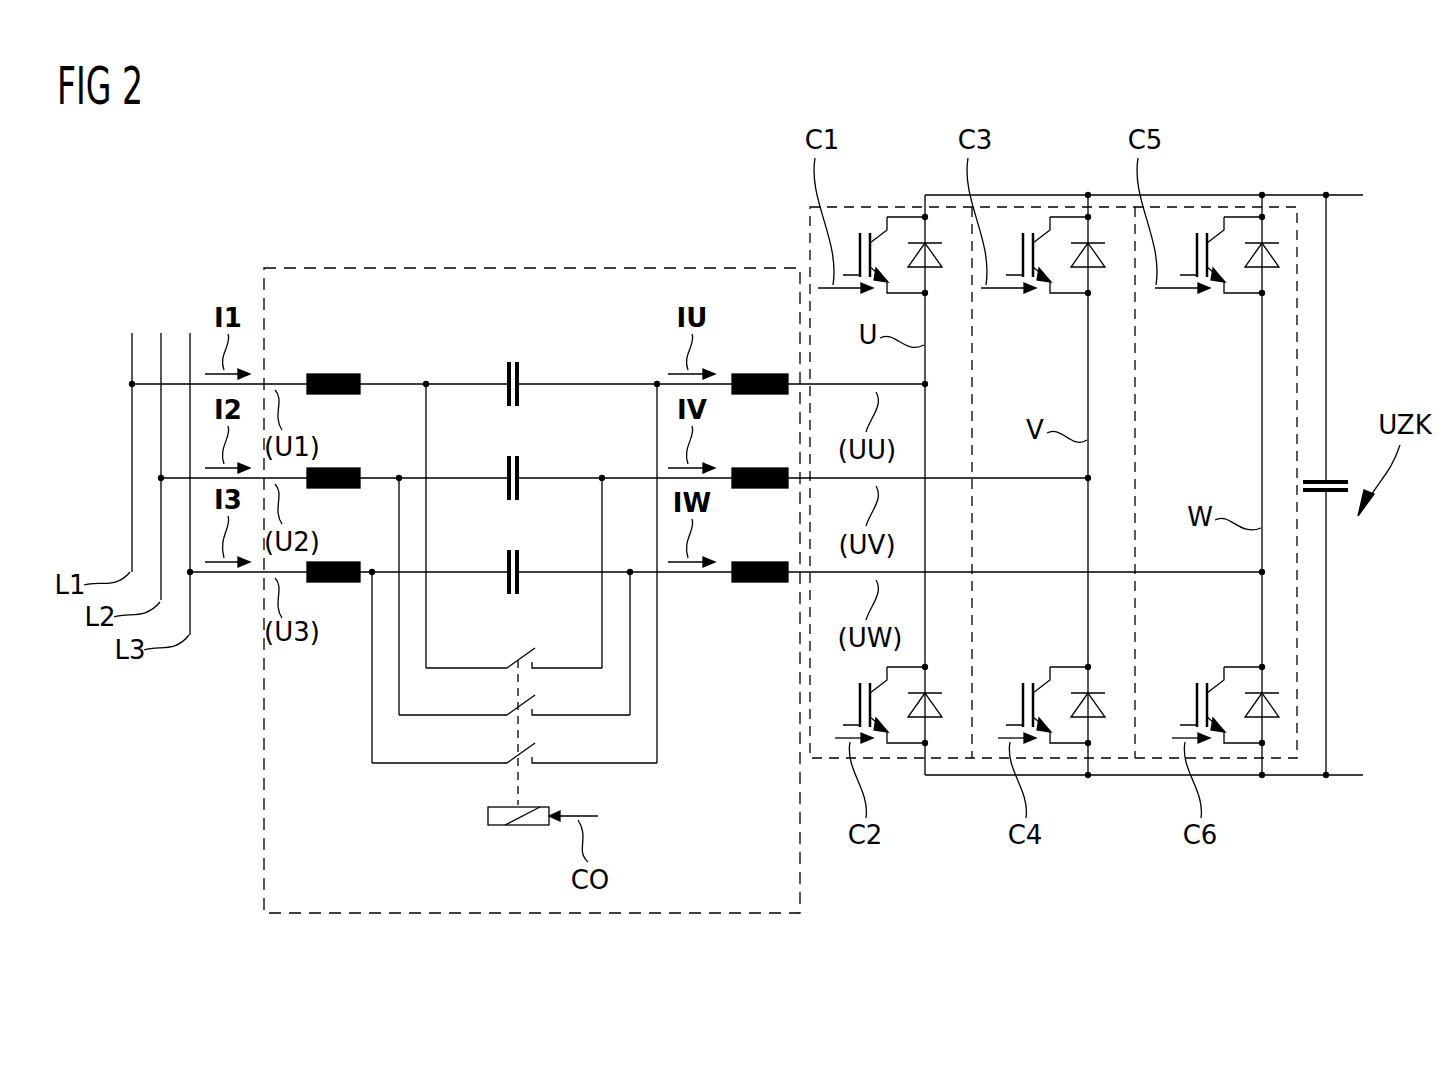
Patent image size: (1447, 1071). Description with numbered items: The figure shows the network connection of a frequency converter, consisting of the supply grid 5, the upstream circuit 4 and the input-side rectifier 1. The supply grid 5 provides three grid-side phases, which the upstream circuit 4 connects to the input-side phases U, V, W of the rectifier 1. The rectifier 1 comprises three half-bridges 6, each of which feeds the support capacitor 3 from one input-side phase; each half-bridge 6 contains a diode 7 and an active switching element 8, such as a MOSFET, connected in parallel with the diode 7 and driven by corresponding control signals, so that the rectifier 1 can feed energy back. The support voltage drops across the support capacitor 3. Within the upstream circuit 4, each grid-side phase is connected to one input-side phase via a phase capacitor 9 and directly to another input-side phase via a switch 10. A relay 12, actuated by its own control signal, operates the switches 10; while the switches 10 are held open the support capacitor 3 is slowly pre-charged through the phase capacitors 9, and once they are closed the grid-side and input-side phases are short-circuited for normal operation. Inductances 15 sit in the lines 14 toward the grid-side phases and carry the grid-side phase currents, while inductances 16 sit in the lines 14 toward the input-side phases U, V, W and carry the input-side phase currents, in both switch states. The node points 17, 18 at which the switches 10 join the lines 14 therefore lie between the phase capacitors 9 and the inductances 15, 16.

The rectifier 1 is at (1318, 128).
The support capacitor 3 is at (1335, 478).
The upstream circuit 4 is at (520, 268).
The supply grid 5 is at (146, 308).
The half-bridge 6 is at (877, 207).
The diode 7 is at (945, 250).
The active switching element 8 is at (845, 273).
The phase capacitor 9 is at (520, 370).
The switch 10 is at (506, 664).
The relay 12 is at (530, 828).
The line 14 is at (468, 383).
The inductance 15 is at (332, 373).
The inductance 16 is at (760, 373).
The node point 17 is at (426, 383).
The node point 18 is at (657, 383).